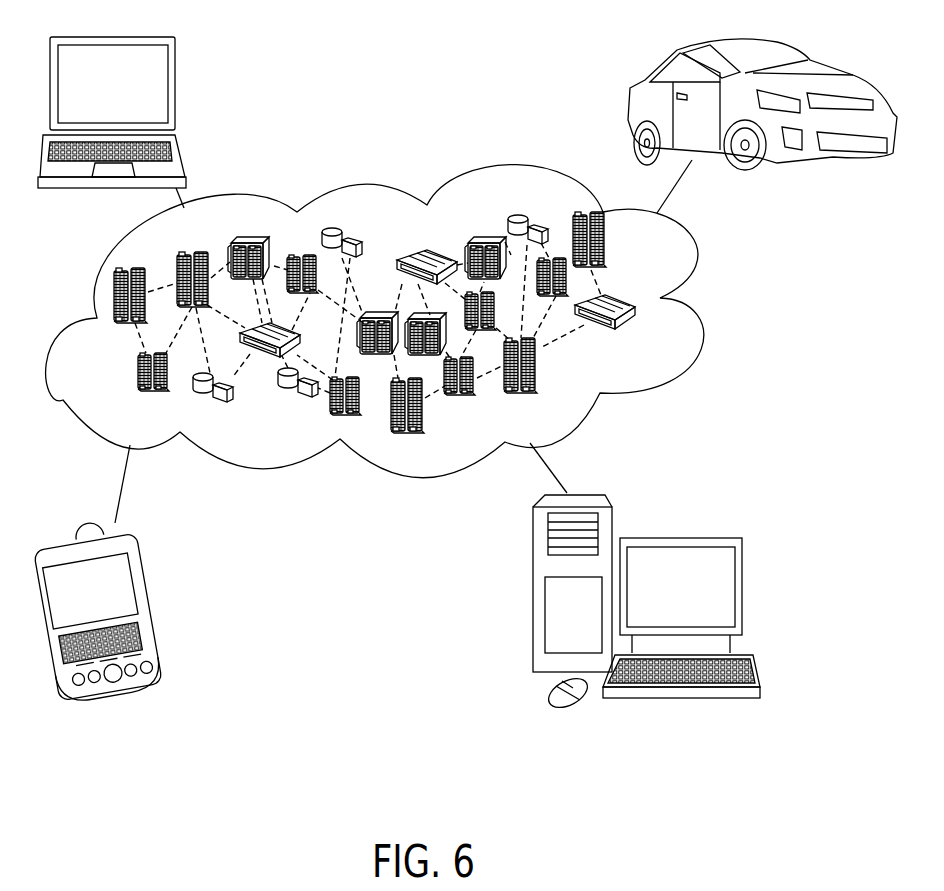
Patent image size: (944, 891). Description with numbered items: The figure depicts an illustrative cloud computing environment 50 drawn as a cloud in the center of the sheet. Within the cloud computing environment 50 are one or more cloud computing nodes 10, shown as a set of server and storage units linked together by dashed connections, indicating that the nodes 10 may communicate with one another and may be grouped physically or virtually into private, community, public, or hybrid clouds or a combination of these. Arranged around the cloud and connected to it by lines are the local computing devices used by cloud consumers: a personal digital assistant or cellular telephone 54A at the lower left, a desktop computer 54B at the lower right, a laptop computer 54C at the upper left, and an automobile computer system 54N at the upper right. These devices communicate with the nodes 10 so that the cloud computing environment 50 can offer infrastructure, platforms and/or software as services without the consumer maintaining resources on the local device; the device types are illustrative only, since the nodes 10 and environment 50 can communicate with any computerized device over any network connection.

The cloud computing node 10 is at (650, 347).
The cloud computing environment 50 is at (698, 252).
The personal digital assistant or cellular telephone 54A is at (147, 587).
The desktop computer 54B is at (742, 587).
The laptop computer 54C is at (175, 90).
The automobile computer system 54N is at (815, 60).